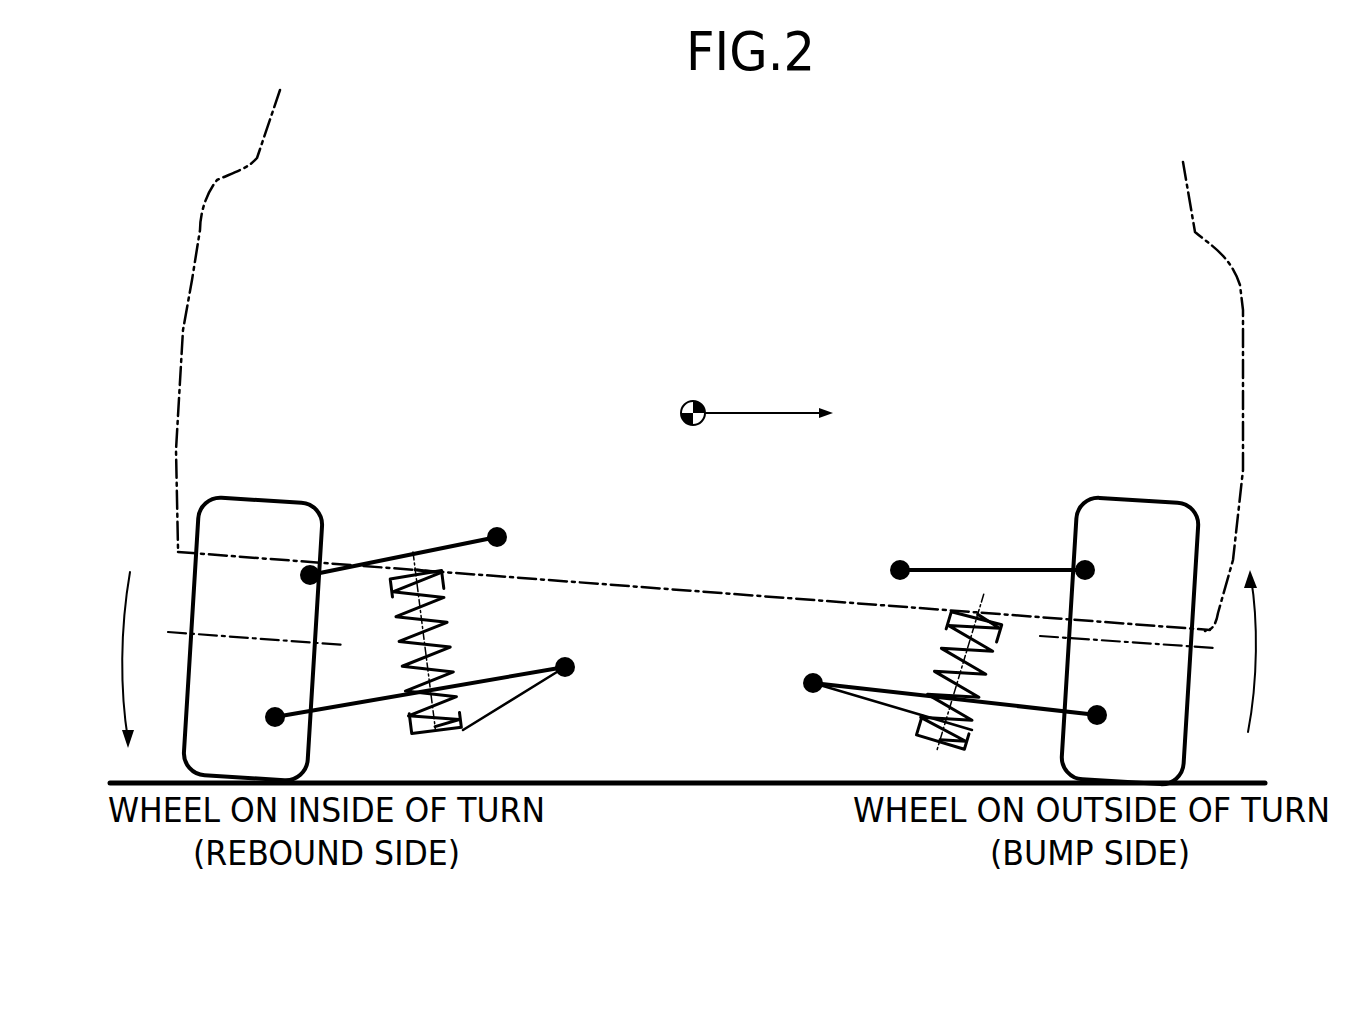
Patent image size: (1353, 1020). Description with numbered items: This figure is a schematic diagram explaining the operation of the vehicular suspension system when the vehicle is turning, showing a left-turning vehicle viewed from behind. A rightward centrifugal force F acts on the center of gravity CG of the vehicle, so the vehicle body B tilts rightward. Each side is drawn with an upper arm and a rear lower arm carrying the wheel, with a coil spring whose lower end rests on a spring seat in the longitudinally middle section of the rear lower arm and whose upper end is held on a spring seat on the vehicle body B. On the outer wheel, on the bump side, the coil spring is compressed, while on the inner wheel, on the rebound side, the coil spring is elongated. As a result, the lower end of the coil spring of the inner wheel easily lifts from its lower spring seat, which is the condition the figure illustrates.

The vehicle body B is at (212, 182).
The center of gravity CG is at (690, 401).
The centrifugal force F is at (780, 414).